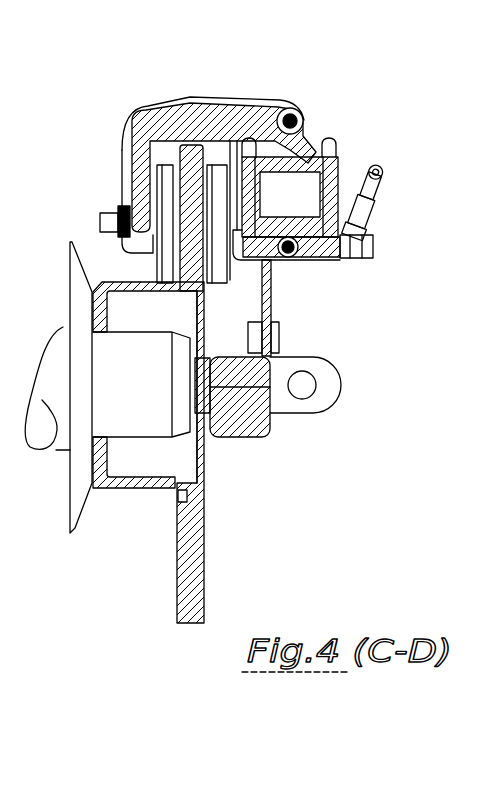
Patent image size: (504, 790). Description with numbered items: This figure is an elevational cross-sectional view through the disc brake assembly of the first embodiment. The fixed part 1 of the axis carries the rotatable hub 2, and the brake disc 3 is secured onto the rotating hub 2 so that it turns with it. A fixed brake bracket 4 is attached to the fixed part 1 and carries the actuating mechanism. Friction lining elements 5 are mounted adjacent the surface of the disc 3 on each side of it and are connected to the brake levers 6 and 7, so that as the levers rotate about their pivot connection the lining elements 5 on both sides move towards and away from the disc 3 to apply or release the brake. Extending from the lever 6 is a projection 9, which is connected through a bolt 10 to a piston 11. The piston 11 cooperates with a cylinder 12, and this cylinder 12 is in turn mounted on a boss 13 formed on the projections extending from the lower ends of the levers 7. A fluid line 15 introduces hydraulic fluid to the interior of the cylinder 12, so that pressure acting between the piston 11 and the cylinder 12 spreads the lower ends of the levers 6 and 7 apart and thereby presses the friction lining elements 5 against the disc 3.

The fixed part of the axis 1 is at (236, 416).
The rotatable hub 2 is at (157, 412).
The brake disc 3 is at (190, 178).
The fixed brake bracket 4 is at (282, 307).
The friction lining elements 5 is at (210, 209).
The brake lever 6 is at (148, 112).
The brake lever 7 is at (219, 125).
The projection 9 is at (236, 135).
The bolt 10 is at (304, 117).
The piston 11 is at (337, 185).
The cylinder 12 is at (362, 205).
The boss 13 is at (289, 258).
The fluid line 15 is at (365, 232).